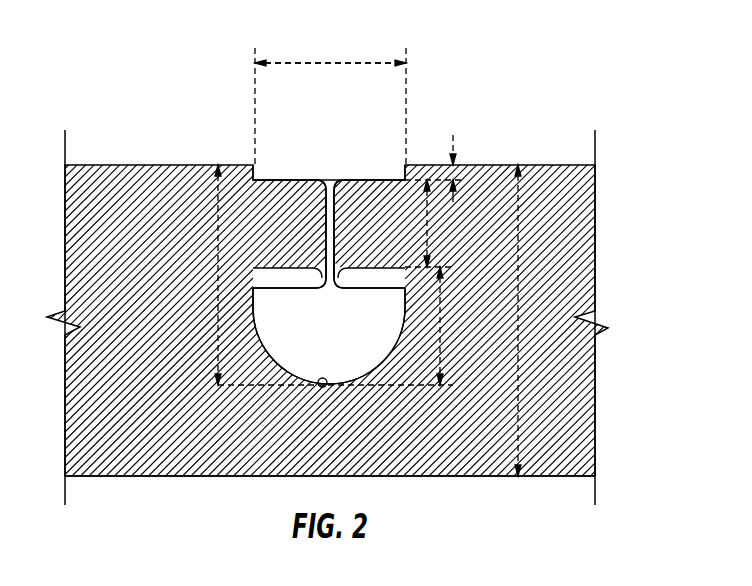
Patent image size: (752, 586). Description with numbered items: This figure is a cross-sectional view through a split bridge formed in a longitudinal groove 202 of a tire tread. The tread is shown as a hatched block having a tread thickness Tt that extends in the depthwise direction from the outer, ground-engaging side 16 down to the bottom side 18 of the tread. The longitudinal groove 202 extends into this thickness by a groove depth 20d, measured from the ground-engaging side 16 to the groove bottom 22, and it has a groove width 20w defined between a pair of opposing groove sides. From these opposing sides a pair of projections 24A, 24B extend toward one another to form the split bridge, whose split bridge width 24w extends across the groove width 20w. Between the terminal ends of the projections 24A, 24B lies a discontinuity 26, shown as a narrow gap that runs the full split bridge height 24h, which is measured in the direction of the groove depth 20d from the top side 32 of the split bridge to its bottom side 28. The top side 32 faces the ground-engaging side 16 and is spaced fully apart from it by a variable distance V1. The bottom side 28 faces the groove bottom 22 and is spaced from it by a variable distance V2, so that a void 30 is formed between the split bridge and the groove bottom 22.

The outer, ground-engaging side 16 is at (547, 164).
The bottom side 18 is at (425, 477).
The longitudinal groove 202 is at (266, 168).
The groove depth 20d is at (218, 276).
The groove width 20w is at (375, 42).
The groove bottom 22 is at (318, 387).
The projection 24A is at (293, 192).
The projection 24B is at (387, 192).
The split bridge height 24h is at (428, 223).
The split bridge width 24w is at (371, 62).
The discontinuity 26 is at (328, 192).
The bottom side of split bridge 28 is at (295, 264).
The void 30 is at (352, 340).
The top side of split bridge 32 is at (304, 180).
The variable distance V1 is at (454, 140).
The variable distance V2 is at (441, 328).
The tread thickness Tt is at (518, 296).